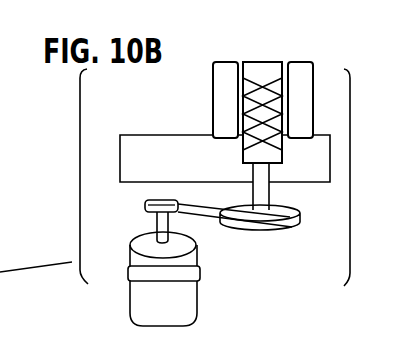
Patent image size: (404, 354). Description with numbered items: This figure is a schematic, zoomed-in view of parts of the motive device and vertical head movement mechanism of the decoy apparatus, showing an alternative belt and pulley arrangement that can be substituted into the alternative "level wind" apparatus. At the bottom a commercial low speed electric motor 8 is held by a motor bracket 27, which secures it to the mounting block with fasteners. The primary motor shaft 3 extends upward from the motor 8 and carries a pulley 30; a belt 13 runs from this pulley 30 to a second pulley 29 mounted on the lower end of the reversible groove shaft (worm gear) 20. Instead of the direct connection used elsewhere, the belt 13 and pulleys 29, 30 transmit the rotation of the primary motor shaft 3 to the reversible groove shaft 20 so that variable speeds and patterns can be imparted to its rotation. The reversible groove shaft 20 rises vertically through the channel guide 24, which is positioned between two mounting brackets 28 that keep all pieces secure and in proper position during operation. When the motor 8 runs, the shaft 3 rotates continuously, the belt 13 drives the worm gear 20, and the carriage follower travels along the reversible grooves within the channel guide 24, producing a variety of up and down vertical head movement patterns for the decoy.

The reversible groove shaft (worm gear) 20 is at (263, 72).
The channel guide 24 is at (220, 81).
The mounting brackets 28 is at (173, 170).
The pulley 29 is at (302, 223).
The belt 13 is at (219, 227).
The pulley 30 is at (165, 200).
The primary motor shaft 3 is at (152, 217).
The motor 8 is at (172, 318).
The motor bracket 27 is at (200, 276).